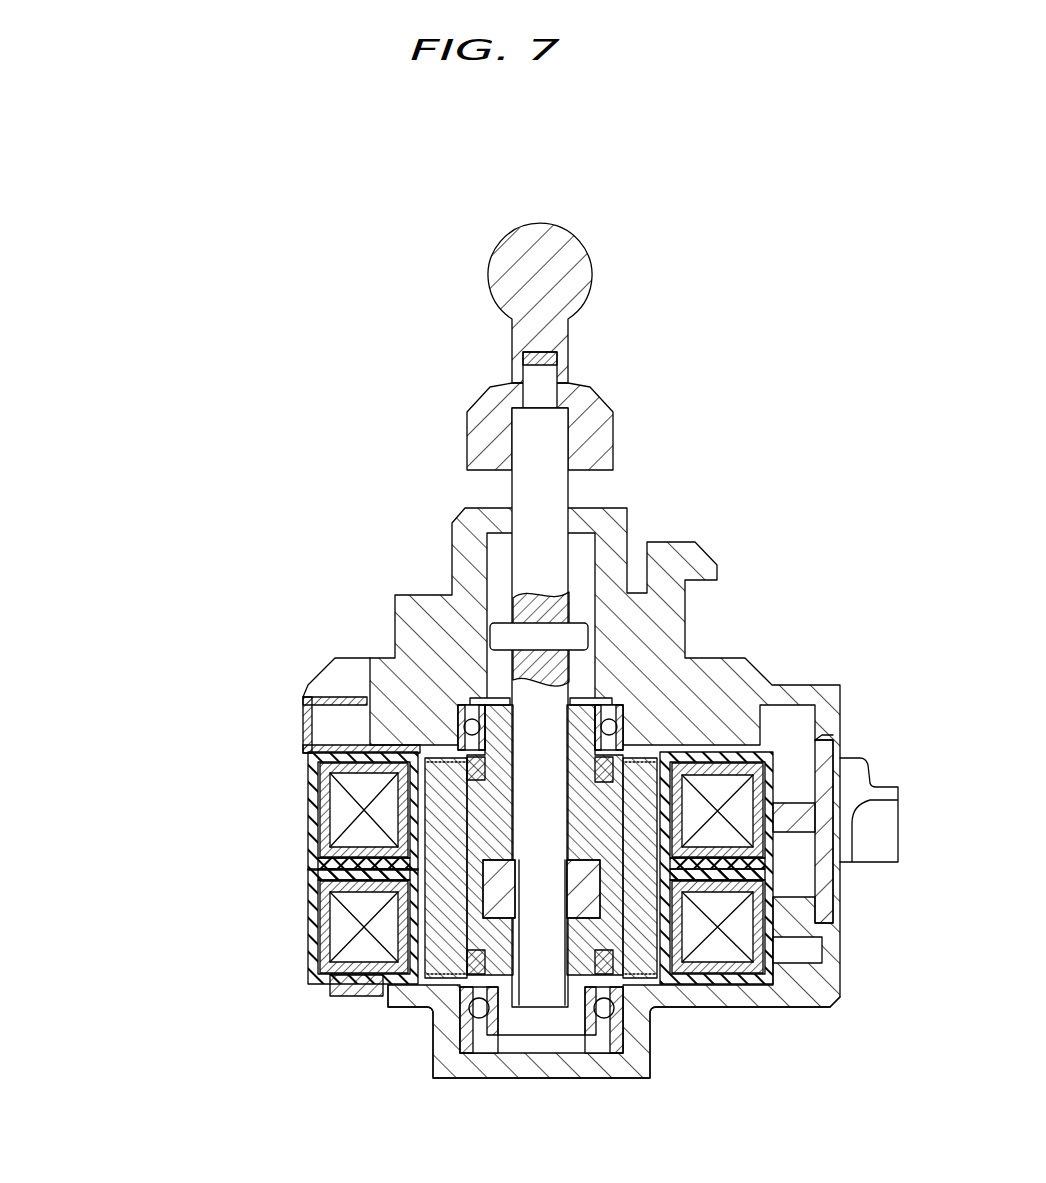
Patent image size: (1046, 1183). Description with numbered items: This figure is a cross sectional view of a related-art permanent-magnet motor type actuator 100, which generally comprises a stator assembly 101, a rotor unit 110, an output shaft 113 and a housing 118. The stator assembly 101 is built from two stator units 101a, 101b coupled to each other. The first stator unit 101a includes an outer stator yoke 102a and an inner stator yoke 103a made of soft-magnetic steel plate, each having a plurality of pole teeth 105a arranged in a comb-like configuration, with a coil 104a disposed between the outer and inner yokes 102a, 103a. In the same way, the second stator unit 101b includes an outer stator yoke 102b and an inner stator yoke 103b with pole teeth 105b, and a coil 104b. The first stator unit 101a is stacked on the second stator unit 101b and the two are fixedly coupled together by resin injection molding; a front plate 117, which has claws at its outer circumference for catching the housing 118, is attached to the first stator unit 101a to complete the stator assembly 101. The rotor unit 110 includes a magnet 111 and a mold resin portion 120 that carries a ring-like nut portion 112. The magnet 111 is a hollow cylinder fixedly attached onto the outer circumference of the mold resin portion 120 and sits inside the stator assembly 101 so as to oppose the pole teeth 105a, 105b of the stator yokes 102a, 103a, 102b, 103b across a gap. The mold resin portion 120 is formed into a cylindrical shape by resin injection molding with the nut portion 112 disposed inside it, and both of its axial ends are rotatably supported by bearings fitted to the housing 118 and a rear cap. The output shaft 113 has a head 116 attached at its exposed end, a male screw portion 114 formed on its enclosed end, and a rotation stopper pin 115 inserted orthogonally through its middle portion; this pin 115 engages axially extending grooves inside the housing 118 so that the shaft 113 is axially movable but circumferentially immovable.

The PM motor type actuator 100 is at (826, 228).
The stator assembly 101 is at (98, 785).
The stator unit 101a is at (263, 810).
The stator unit 101b is at (263, 947).
The outer stator yoke 102a is at (307, 772).
The outer stator yoke 102b is at (310, 980).
The inner stator yoke 103a is at (315, 866).
The inner stator yoke 103b is at (313, 880).
The coil 104a is at (345, 806).
The coil 104b is at (345, 948).
The pole teeth 105a is at (320, 818).
The pole teeth 105b is at (320, 937).
The rotor unit 110 is at (614, 922).
The magnet 111 is at (655, 958).
The nut portion 112 is at (627, 1080).
The output shaft 113 is at (545, 493).
The screw portion 114 is at (465, 1053).
The rotation stopper pin 115 is at (503, 633).
The head 116 is at (556, 285).
The front plate 117 is at (348, 745).
The housing 118 is at (435, 605).
The mold resin portion 120 is at (510, 917).